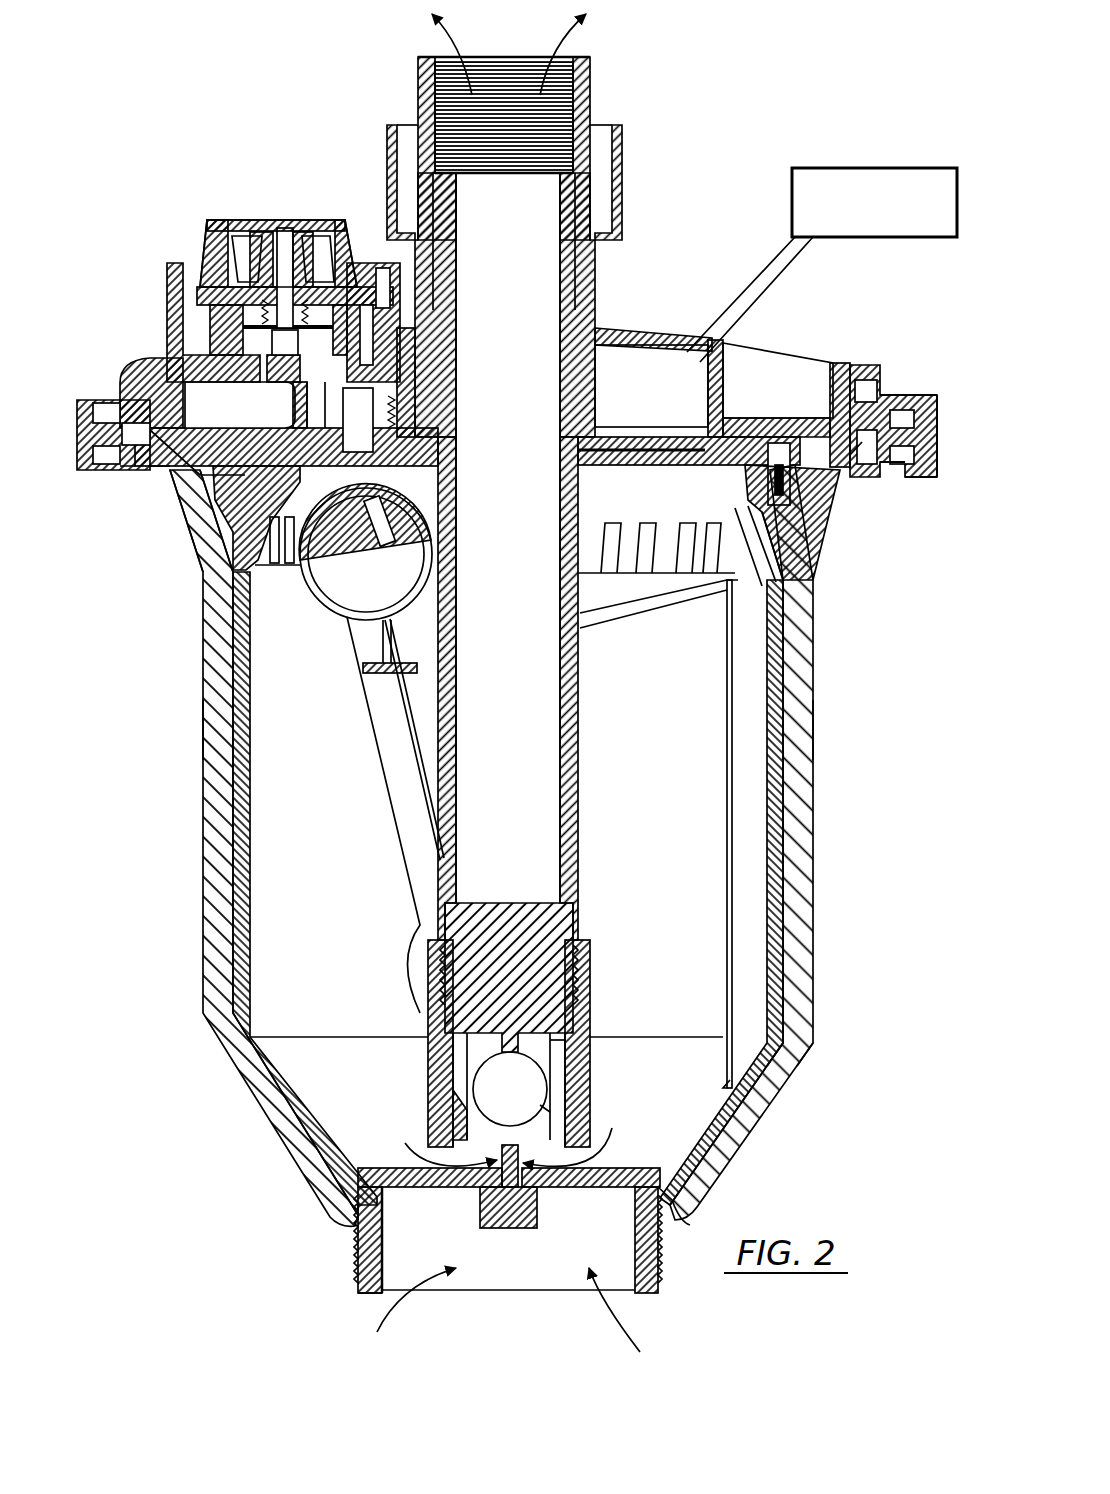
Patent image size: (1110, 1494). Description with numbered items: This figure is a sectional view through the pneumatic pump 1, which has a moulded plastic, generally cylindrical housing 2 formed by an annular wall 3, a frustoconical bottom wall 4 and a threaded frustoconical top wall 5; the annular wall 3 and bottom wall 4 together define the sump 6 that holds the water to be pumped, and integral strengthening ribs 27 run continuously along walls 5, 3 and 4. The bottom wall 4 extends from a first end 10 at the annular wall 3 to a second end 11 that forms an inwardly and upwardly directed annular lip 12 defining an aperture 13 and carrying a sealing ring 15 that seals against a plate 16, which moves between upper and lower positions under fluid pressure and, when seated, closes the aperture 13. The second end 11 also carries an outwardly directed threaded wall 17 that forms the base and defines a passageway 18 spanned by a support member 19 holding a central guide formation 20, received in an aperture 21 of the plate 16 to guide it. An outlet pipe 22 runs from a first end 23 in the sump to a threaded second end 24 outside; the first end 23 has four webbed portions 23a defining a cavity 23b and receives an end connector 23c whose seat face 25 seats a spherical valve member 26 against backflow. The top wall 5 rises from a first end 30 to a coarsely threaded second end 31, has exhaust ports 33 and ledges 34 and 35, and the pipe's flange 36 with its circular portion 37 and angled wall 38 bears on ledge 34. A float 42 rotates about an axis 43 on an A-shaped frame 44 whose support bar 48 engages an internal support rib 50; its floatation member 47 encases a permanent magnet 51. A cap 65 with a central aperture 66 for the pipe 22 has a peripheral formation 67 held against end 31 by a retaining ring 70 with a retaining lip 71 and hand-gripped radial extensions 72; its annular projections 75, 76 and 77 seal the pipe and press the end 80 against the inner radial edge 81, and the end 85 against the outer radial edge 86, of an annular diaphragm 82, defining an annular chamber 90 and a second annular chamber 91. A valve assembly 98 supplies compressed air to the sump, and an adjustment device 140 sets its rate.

The pneumatic pump 1 is at (713, 248).
The housing 2 is at (192, 832).
The annular wall 3 is at (780, 762).
The frustoconical bottom wall 4 is at (760, 1078).
The threaded frustoconical top wall 5 is at (806, 512).
The main chamber or sump 6 is at (300, 857).
The first end 10 is at (776, 1050).
The second end 11 is at (688, 1210).
The annular lip 12 is at (368, 1192).
The aperture 13 is at (418, 1196).
The sealing ring 15 is at (650, 1218).
The plate 16 is at (378, 1170).
The threaded wall 17 is at (365, 1252).
The passageway 18 is at (380, 1292).
The support member 19 is at (482, 1214).
The guide formation 20 is at (434, 1140).
The aperture 21 is at (566, 1144).
The outlet pipe 22 is at (592, 780).
The first end 23 is at (440, 1055).
The webbed portions 23a is at (560, 968).
The cavity 23b is at (578, 1062).
The end connector 23c is at (455, 1130).
The second end 24 is at (590, 108).
The seat face 25 is at (548, 1100).
The spherical valve member 26 is at (498, 1088).
The strengthening ribs 27 is at (214, 640).
The first end 30 is at (233, 577).
The second end 31 is at (150, 388).
The exhaust ports 33 is at (222, 478).
The ledge 34 is at (236, 550).
The ledge 35 is at (185, 462).
The flange 36 is at (602, 417).
The circular portion 37 is at (716, 424).
The angled wall 38 is at (758, 452).
The float 42 is at (350, 694).
The axis 43 is at (745, 592).
The A-shaped frame 44 is at (392, 745).
The floatation member 47 is at (332, 612).
The support bar 48 is at (643, 606).
The internal support rib 50 is at (744, 652).
The permanent magnet 51 is at (378, 510).
The cap 65 is at (598, 338).
The central aperture 66 is at (604, 300).
The peripheral formation 67 is at (885, 375).
The retaining ring 70 is at (880, 428).
The retaining lip 71 is at (167, 356).
The radial extensions 72 is at (930, 478).
The annular projection 75 is at (556, 380).
The annular projection 76 is at (736, 362).
The annular projection 77 is at (836, 366).
The end 80 is at (720, 440).
The inner radial edge 81 is at (750, 440).
The annular diaphragm 82 is at (838, 378).
The end 85 is at (810, 483).
The outer radial edge 86 is at (840, 455).
The annular chamber 90 is at (860, 392).
The annular chamber 91 is at (428, 354).
The valve assembly 98 is at (208, 230).
The adjustment device 140 is at (292, 222).